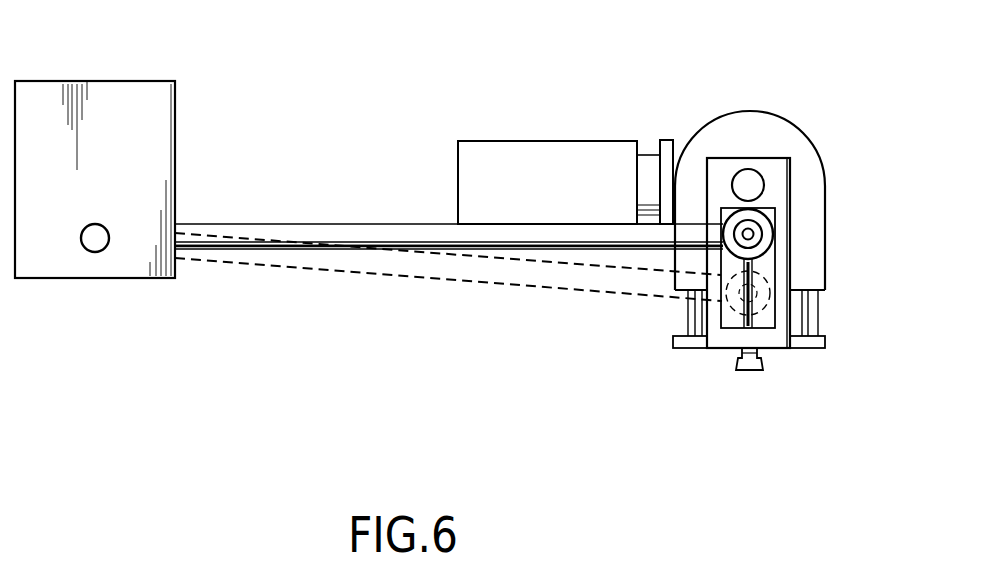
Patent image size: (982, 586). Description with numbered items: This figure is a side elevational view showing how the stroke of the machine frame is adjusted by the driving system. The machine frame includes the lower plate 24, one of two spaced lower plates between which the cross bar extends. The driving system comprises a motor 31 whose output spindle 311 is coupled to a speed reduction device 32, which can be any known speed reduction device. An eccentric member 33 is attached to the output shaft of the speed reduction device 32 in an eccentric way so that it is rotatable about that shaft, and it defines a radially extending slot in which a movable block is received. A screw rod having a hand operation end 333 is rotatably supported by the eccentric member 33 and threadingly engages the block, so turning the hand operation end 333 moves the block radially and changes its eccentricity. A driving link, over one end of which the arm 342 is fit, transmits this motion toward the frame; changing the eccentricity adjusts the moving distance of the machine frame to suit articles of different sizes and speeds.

The lower plate 24 is at (92, 120).
The motor 31 is at (537, 160).
The output spindle 311 is at (651, 163).
The speed reduction device 32 is at (745, 128).
The eccentric member 33 is at (774, 171).
The arm 342 is at (772, 231).
The hand operation end 333 is at (755, 372).